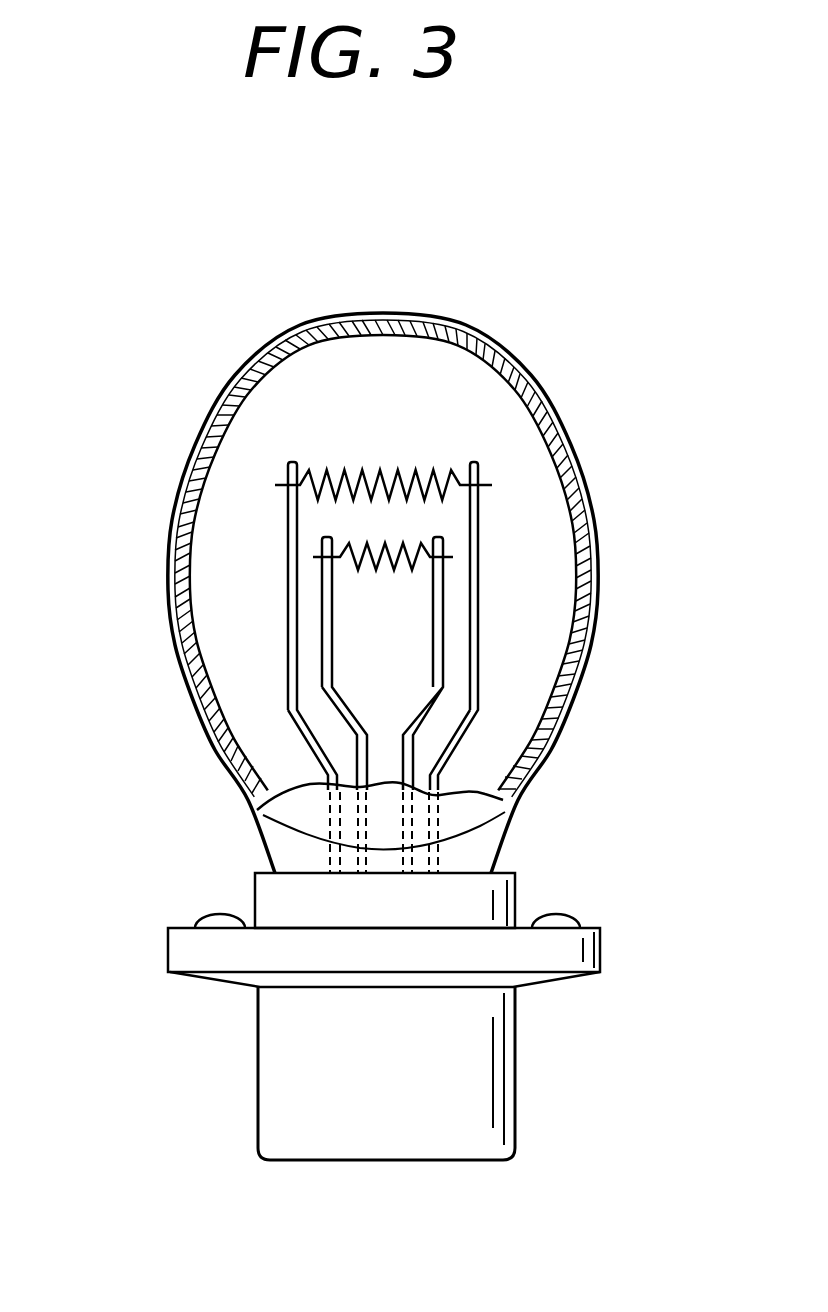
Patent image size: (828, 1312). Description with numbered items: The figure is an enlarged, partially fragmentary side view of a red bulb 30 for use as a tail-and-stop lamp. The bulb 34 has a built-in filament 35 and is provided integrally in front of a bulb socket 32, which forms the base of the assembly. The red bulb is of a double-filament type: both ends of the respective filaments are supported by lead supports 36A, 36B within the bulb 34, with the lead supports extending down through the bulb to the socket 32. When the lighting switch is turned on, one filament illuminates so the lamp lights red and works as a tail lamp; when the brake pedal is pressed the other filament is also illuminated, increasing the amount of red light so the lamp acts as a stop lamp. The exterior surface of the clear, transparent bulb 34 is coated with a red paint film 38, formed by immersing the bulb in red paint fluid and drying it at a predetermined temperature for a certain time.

The lamp 30 is at (190, 393).
The bulb socket 32 is at (293, 1075).
The bulb 34 is at (567, 425).
The filament 35 is at (362, 470).
The lead support 36A is at (290, 583).
The lead support 36B is at (323, 673).
The red paint film 38 is at (468, 332).